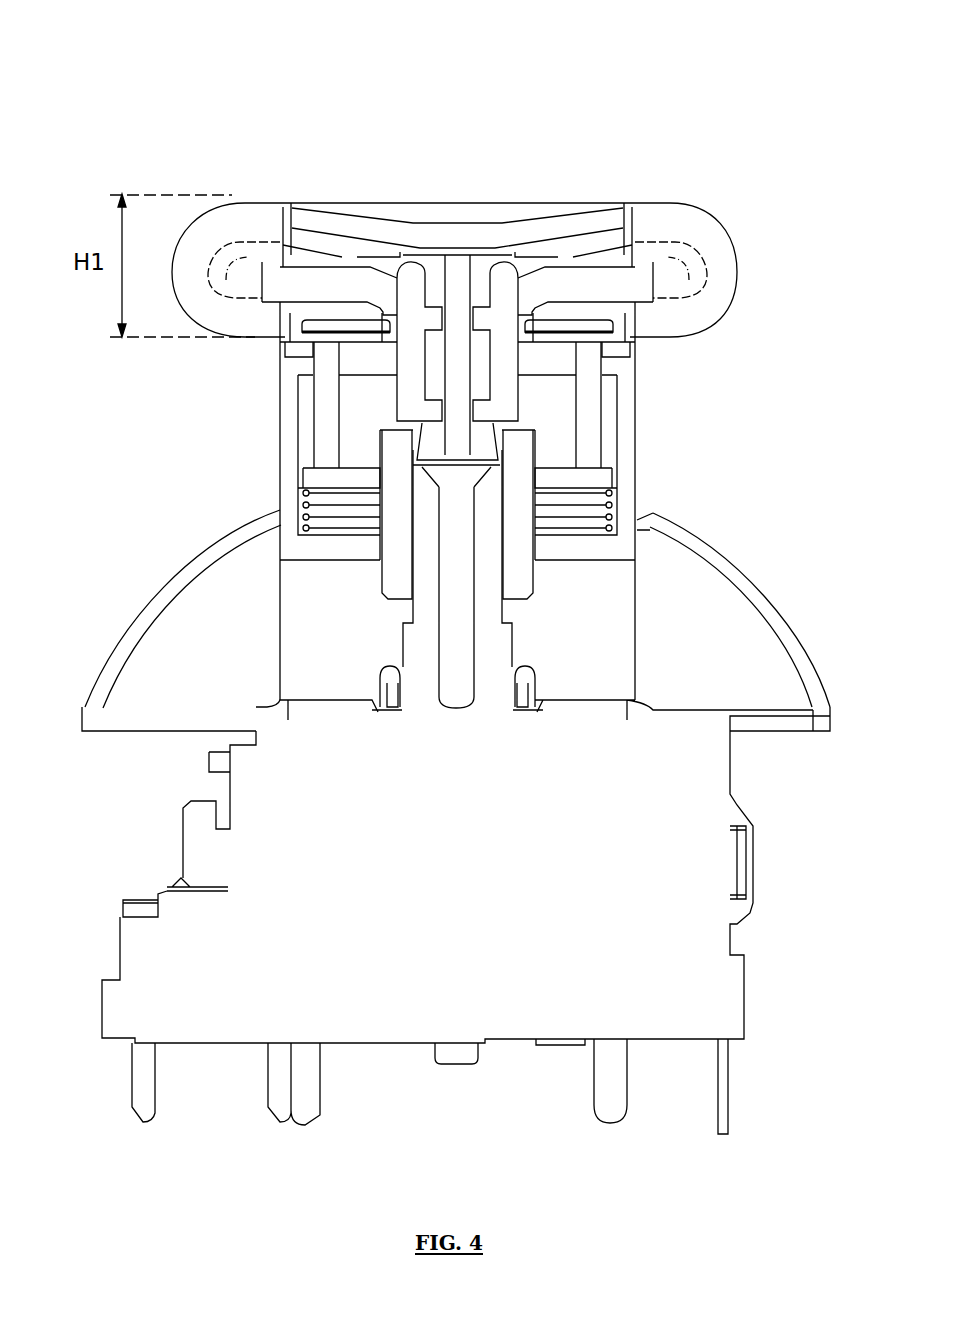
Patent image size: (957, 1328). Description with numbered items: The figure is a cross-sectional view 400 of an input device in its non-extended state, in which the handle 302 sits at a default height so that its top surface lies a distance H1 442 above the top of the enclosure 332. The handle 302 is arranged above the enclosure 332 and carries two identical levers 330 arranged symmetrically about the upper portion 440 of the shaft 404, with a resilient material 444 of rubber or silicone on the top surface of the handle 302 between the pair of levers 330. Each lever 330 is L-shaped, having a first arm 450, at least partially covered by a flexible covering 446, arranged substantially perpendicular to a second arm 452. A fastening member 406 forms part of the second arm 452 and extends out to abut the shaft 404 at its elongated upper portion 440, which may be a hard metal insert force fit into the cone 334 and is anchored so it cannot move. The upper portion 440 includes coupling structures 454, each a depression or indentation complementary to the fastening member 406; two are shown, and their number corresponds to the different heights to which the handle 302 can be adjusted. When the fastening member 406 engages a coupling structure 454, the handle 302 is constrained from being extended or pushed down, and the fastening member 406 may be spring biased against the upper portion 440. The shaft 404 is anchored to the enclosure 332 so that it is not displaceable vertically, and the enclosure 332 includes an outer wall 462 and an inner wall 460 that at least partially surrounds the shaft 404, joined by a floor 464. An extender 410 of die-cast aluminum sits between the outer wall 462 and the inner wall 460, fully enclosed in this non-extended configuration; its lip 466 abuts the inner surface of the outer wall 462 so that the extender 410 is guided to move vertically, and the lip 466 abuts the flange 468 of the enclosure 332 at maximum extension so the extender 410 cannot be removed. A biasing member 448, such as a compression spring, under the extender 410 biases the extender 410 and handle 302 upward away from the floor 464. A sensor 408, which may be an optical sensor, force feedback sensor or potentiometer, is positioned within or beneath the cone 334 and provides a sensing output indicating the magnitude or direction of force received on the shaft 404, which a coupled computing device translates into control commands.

The cross-sectional view 400 is at (753, 63).
The handle 302 is at (444, 150).
The lever 330 is at (736, 206).
The distance H1 442 is at (60, 258).
The resilient material 444 is at (548, 207).
The first arm 450 is at (283, 280).
The enclosure 332 is at (275, 482).
The flexible covering 446 is at (193, 298).
The flange 468 is at (288, 357).
The floor 464 is at (603, 560).
The second arm 452 is at (395, 348).
The extender 410 is at (593, 438).
The lip 466 is at (600, 476).
The biasing member 448 is at (300, 515).
The inner wall 460 is at (527, 460).
The coupling structure 454 is at (620, 360).
The upper portion 440 is at (478, 368).
The fastening member 406 is at (496, 399).
The sensor 408 is at (511, 714).
The cone 334 is at (775, 620).
The outer wall 462 is at (648, 520).
The shaft 404 is at (436, 632).